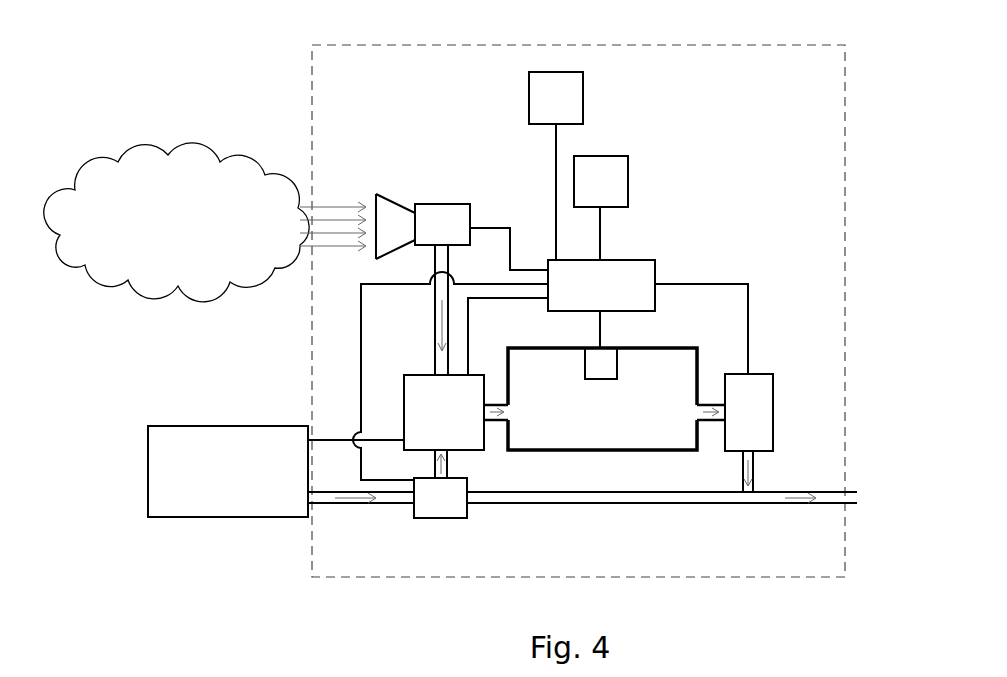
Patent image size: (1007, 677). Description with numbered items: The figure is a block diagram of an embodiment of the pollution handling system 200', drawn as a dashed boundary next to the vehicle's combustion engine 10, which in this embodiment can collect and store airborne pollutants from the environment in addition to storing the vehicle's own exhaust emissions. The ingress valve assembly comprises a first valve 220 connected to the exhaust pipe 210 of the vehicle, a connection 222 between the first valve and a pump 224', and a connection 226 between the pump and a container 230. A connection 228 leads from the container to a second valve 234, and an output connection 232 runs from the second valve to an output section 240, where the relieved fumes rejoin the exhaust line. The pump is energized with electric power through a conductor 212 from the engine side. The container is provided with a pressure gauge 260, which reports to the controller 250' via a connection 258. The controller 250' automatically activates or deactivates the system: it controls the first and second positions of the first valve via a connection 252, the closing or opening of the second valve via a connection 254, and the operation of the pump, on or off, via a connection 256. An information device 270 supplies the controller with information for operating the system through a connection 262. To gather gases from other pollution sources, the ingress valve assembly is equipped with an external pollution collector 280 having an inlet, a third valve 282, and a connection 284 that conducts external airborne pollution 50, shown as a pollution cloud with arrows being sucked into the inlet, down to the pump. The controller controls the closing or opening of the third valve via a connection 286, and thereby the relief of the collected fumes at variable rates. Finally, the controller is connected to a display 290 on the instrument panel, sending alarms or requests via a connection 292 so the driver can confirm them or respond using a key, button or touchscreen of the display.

The combustion engine (CE) 10 is at (148, 462).
The external airborne pollution 50 is at (184, 166).
The pollution handling system 200' is at (578, 311).
The exhaust pipe 210 is at (340, 505).
The conductor 212 is at (333, 436).
The first valve V1 220 is at (430, 519).
The connection 222 is at (432, 462).
The pump 224' is at (424, 390).
The connection 226 is at (497, 422).
The connection 228 is at (716, 406).
The container 230 is at (604, 452).
The output connection 232 is at (756, 474).
The second valve V2 234 is at (775, 414).
The output section 240 is at (858, 497).
The controller 250' is at (652, 267).
The connection 252 is at (361, 307).
The connection 254 is at (727, 283).
The connection 256 is at (522, 298).
The connection 258 is at (604, 320).
The pressure gauge 260 is at (593, 347).
The connection 262 is at (604, 250).
The information device 270 is at (628, 186).
The external pollution collector 280 is at (398, 204).
The third valve V3 282 is at (444, 204).
The connection 284 is at (437, 290).
The connection 286 is at (478, 228).
The display 290 is at (529, 96).
The connection 292 is at (556, 150).